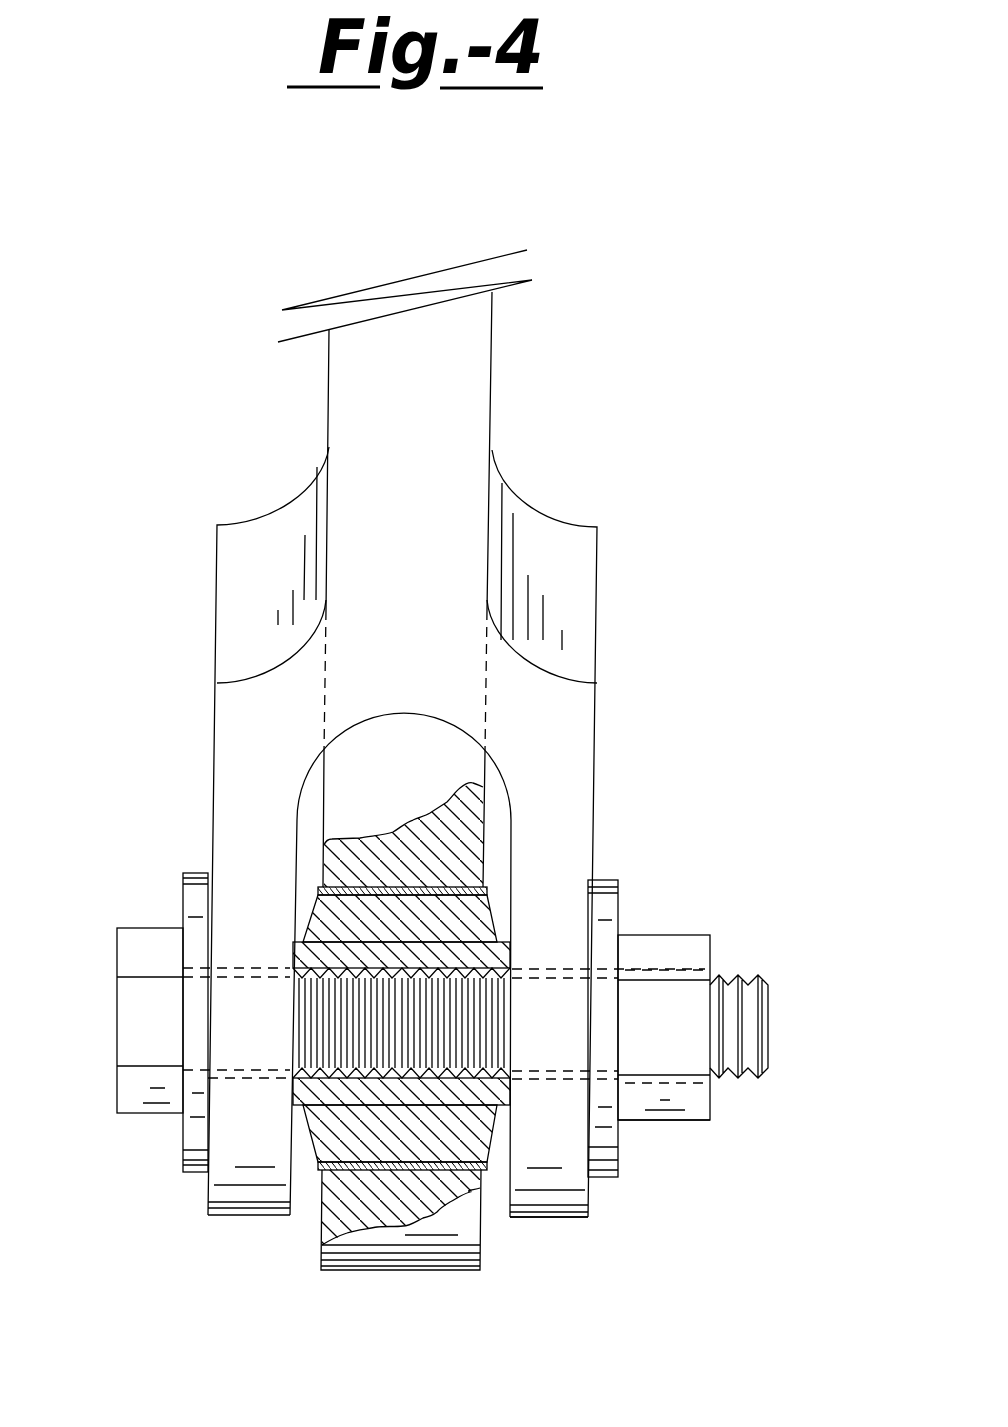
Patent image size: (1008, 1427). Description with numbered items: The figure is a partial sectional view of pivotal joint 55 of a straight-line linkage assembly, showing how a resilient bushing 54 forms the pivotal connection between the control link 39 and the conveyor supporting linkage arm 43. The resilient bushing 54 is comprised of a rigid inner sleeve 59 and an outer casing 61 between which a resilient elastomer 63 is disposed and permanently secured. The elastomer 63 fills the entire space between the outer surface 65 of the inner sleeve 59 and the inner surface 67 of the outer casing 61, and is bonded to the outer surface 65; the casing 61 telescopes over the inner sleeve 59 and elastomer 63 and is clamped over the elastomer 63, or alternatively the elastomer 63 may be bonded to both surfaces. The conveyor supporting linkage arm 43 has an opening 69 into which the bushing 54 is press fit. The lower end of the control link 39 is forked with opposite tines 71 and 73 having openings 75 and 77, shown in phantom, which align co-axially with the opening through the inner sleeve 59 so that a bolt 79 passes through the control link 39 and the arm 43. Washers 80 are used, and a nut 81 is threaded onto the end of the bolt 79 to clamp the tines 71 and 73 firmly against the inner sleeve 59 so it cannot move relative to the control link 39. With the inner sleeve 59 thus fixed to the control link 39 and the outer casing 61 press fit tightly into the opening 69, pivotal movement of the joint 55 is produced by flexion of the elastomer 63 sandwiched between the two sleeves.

The pivotal joint 55 is at (603, 448).
The control link 39 is at (493, 375).
The conveyor supporting linkage arm 43 is at (440, 745).
The resilient bushing 54 is at (490, 1178).
The washers 80 is at (620, 913).
The tine 71 is at (243, 1220).
The opening 77 is at (620, 948).
The bolt 79 is at (760, 975).
The nut 81 is at (680, 1123).
The tine 73 is at (557, 1220).
The opening 75 is at (248, 963).
The inner surface 67 is at (357, 1153).
The inner sleeve 59 is at (512, 958).
The resilient elastomer 63 is at (470, 937).
The outer surface 65 is at (318, 918).
The outer casing 61 is at (448, 888).
The opening 69 is at (433, 1170).